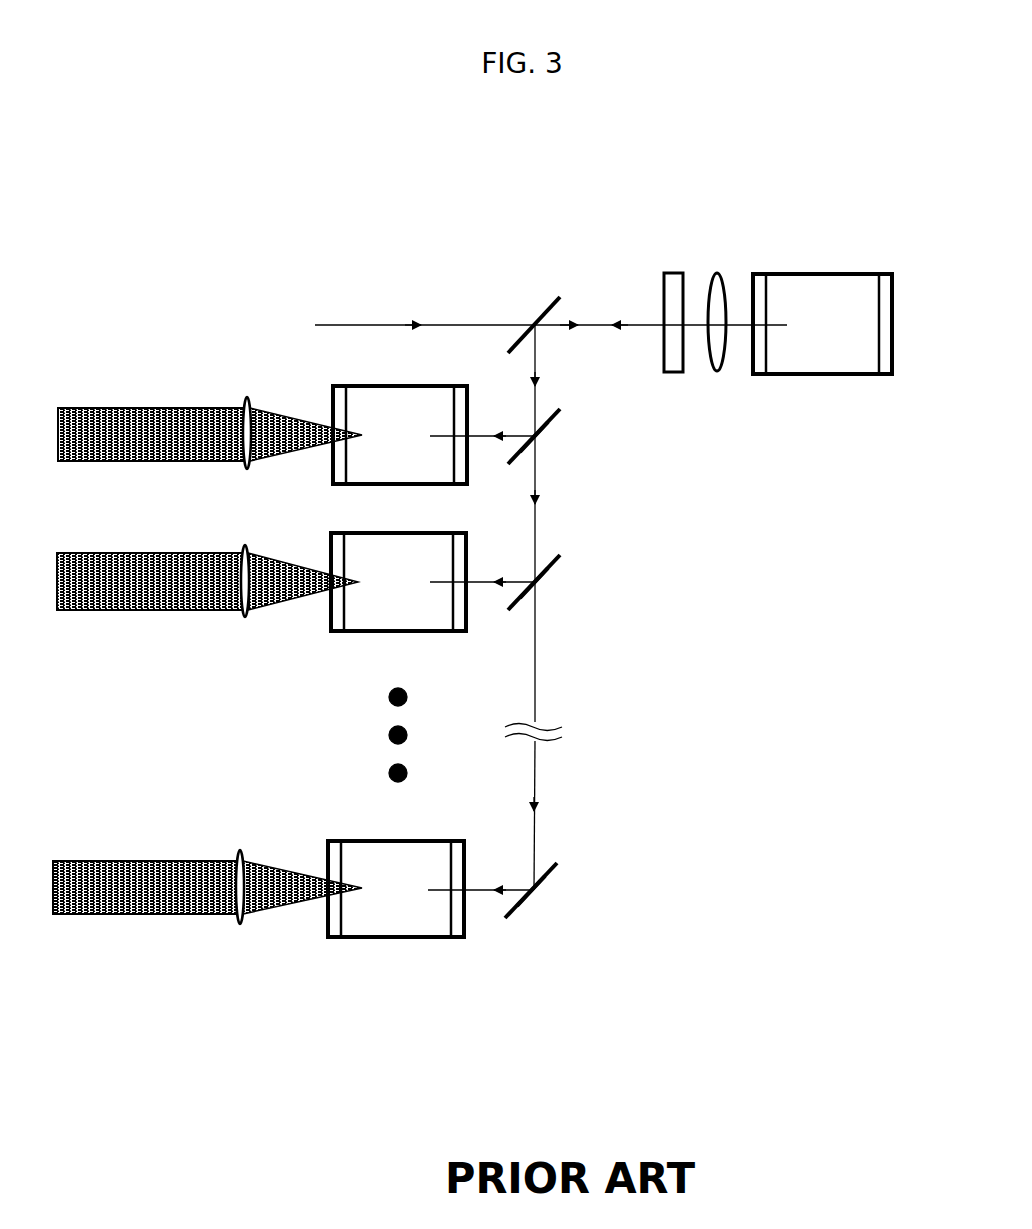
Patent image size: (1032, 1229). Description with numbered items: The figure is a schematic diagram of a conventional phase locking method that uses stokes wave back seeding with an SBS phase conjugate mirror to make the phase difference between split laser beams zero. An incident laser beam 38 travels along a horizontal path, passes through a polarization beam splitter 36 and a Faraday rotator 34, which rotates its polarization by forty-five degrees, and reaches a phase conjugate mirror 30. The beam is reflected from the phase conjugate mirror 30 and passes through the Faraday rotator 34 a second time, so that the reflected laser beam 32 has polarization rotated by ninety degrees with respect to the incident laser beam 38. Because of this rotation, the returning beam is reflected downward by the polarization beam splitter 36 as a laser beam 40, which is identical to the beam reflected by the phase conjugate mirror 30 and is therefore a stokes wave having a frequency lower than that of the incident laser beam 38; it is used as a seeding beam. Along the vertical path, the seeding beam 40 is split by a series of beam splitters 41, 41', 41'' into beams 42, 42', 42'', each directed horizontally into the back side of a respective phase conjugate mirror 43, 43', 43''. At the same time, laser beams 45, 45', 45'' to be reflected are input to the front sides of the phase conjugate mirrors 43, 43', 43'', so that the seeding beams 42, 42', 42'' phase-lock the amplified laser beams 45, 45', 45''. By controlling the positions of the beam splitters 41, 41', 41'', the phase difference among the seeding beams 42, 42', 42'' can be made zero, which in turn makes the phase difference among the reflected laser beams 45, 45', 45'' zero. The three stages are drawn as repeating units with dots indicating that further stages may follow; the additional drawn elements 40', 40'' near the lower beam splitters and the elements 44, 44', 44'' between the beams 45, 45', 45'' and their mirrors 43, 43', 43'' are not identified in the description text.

The phase conjugate mirror 30 is at (860, 375).
The reflected laser beam 32 is at (717, 370).
The Faraday rotator 34 is at (673, 372).
The polarization beam splitter 36 is at (548, 310).
The incident laser beam 38 is at (380, 322).
The seeding beam 40 is at (561, 411).
The beam splitter 41 is at (561, 459).
The seeding beam 42 is at (482, 476).
The phase conjugate mirror 43 is at (366, 453).
The lens 44 is at (215, 458).
The laser beam to be reflected 45 is at (210, 464).
The beam splitter 40' is at (562, 557).
The beam splitter 41' is at (563, 608).
The seeding beam 42' is at (482, 625).
The phase conjugate mirror 43' is at (363, 600).
The lens 44' is at (212, 606).
The laser beam to be reflected 45' is at (207, 610).
The beam splitter 40'' is at (562, 866).
The beam splitter 41'' is at (562, 916).
The seeding beam 42'' is at (481, 931).
The phase conjugate mirror 43'' is at (359, 906).
The lens 44'' is at (207, 911).
The laser beam to be reflected 45'' is at (207, 916).